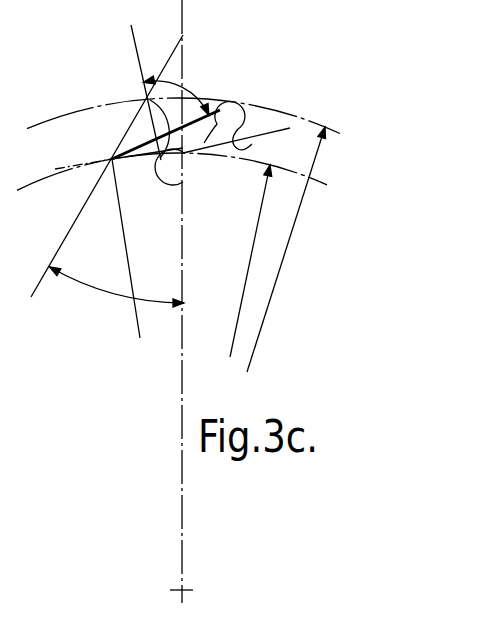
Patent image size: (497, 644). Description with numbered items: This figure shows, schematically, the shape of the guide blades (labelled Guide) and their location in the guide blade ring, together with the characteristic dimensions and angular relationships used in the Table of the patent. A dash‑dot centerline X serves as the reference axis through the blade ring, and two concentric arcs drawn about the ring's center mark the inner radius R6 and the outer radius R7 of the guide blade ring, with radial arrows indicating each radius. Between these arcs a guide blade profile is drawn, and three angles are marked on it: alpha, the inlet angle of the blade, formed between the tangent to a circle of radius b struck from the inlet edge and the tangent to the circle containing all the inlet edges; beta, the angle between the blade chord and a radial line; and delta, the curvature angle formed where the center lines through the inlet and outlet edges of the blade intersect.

The axis of symmetry X is at (191, 590).
The outer radius of the guide blade ring R7 is at (281, 259).
The inner radius of the guide blade ring R6 is at (253, 254).
The guide blades Guide is at (307, 62).